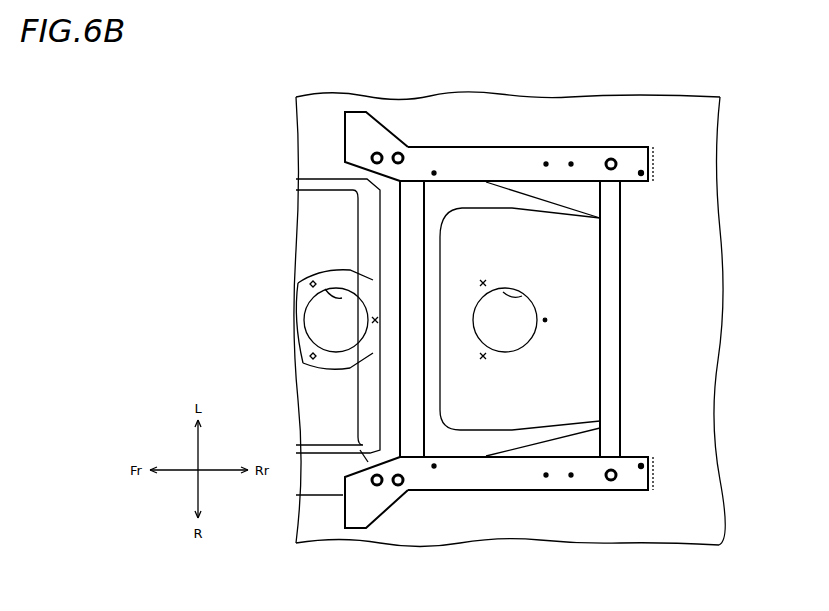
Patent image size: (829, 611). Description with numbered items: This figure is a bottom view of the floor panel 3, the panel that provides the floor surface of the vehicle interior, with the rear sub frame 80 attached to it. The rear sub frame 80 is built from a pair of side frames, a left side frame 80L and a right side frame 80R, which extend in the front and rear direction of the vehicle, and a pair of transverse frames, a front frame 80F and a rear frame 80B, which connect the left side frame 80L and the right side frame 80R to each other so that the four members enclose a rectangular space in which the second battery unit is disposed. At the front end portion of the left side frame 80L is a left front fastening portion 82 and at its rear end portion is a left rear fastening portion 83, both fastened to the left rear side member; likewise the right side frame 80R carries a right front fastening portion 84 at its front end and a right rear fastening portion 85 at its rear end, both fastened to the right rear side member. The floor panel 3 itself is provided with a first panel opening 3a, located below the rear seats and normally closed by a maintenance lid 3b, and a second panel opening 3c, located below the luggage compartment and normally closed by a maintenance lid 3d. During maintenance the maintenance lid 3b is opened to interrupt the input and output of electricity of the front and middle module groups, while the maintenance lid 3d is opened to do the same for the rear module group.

The floor panel 3 is at (501, 319).
The first panel opening 3a is at (333, 293).
The maintenance lid 3b is at (327, 325).
The second panel opening 3c is at (507, 290).
The maintenance lid 3d is at (512, 330).
The rear sub frame 80 is at (506, 321).
The left side frame 80L is at (526, 118).
The right side frame 80R is at (526, 522).
The front frame 80F is at (415, 230).
The rear frame 80B is at (612, 320).
The left front fastening portion 82 is at (378, 148).
The left rear fastening portion 83 is at (612, 158).
The right front fastening portion 84 is at (378, 490).
The right rear fastening portion 85 is at (612, 480).